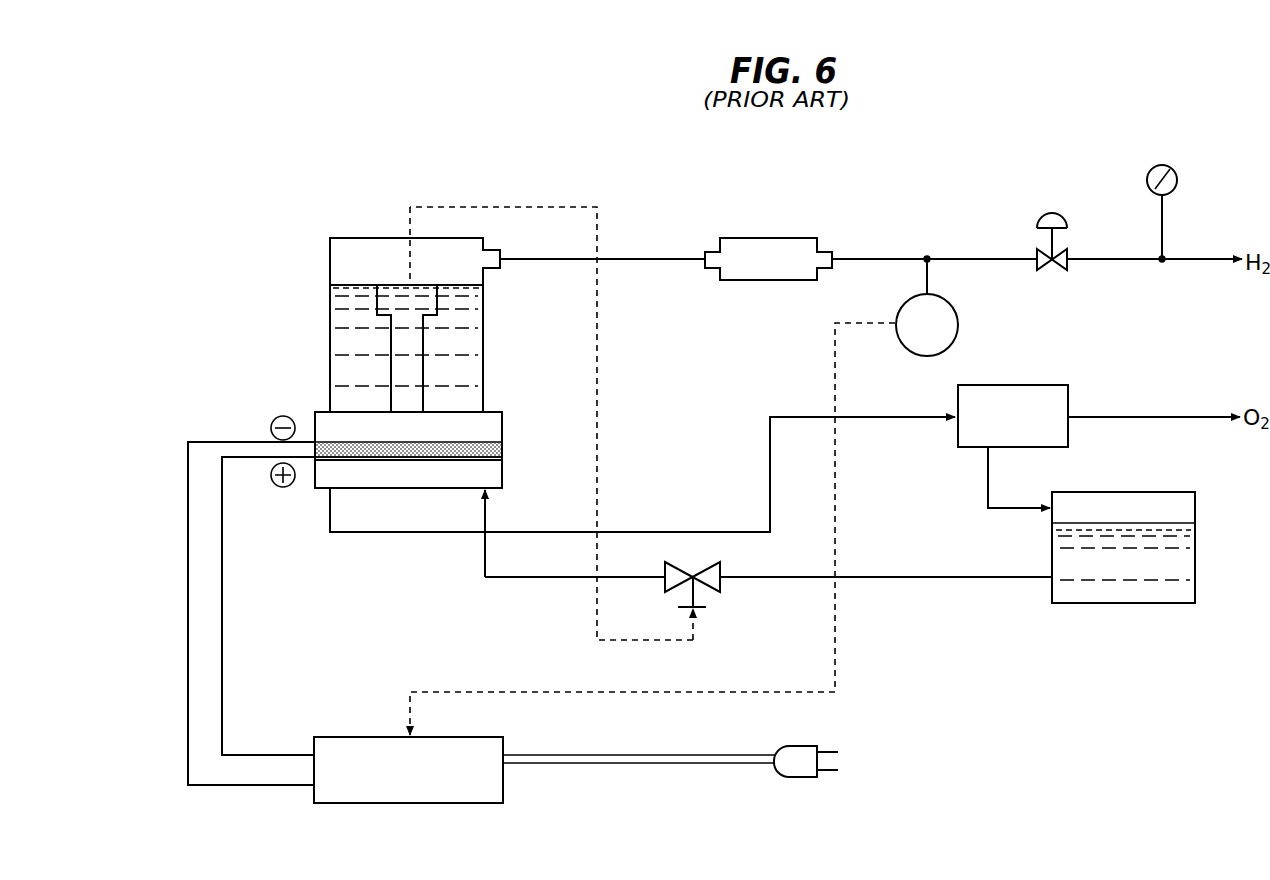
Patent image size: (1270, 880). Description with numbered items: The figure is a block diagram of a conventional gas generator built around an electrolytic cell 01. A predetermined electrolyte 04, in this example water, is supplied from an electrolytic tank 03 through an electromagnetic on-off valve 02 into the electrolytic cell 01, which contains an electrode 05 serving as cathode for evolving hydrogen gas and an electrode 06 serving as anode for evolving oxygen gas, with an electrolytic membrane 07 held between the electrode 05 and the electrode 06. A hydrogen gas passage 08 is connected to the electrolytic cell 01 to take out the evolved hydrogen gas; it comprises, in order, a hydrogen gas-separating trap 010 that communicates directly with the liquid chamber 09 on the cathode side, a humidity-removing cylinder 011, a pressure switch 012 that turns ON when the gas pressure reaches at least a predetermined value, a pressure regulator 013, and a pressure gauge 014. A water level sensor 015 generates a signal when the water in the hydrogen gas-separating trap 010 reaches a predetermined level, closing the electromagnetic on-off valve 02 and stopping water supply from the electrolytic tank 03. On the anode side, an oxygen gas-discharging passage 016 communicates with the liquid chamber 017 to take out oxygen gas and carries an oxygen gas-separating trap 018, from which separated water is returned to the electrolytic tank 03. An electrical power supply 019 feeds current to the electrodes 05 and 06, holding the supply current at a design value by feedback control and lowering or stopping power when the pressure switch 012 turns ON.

The electrolytic cell 01 is at (324, 410).
The electromagnetic on-off valve 02 is at (706, 608).
The electrolytic tank 03 is at (1184, 492).
The electrolyte 04 is at (1068, 594).
The electrode (cathode) 05 is at (482, 446).
The electrode (anode) 06 is at (478, 460).
The electrolytic membrane 07 is at (440, 460).
The hydrogen gas passage 08 is at (893, 258).
The liquid chamber 09 is at (488, 410).
The hydrogen gas-separating trap 010 is at (328, 286).
The humidity-removing cylinder 011 is at (732, 240).
The pressure switch 012 is at (954, 306).
The pressure regulator 013 is at (1058, 213).
The pressure gauge 014 is at (1172, 170).
The water level sensor 015 is at (435, 306).
The oxygen gas-discharging passage 016 is at (695, 530).
The liquid chamber 017 is at (384, 489).
The oxygen gas-separating trap 018 is at (1084, 446).
The electrical power supply 019 is at (325, 742).